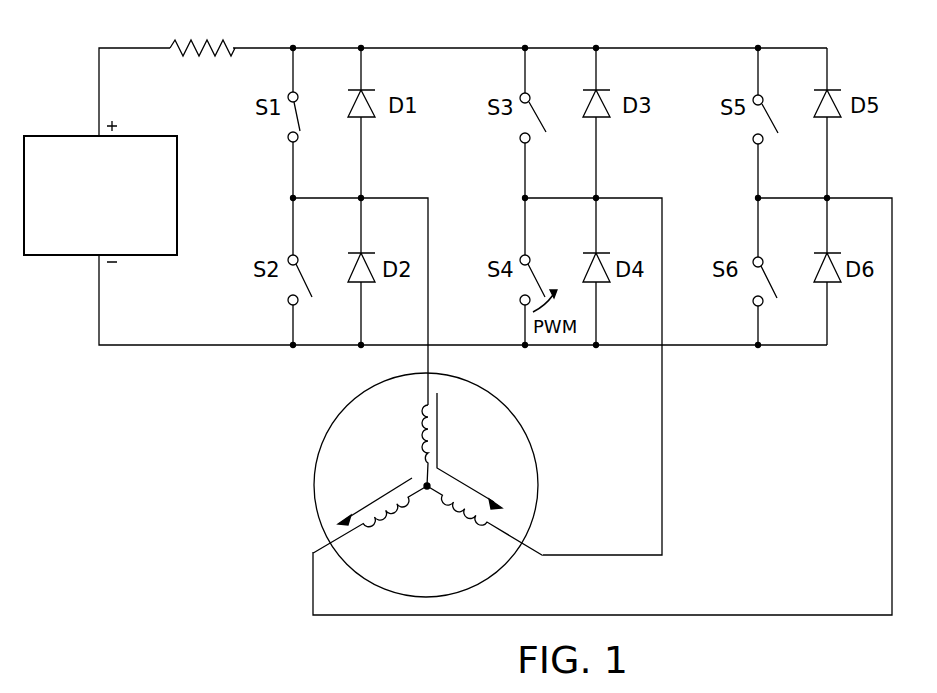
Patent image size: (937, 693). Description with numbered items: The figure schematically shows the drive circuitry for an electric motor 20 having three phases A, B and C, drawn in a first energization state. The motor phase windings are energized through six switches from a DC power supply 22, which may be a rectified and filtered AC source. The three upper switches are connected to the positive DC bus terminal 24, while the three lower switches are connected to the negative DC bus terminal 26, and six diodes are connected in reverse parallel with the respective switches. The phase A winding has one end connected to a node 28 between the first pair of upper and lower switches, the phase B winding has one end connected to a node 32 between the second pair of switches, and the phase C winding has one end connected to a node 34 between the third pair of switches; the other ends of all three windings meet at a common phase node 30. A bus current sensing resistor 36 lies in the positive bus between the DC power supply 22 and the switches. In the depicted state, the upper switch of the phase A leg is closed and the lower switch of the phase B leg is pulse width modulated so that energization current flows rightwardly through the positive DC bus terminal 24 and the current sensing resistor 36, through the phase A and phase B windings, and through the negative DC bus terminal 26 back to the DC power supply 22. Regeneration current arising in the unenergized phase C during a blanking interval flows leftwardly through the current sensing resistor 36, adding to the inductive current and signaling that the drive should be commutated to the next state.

The electric motor 20 is at (339, 407).
The DC power supply 22 is at (178, 181).
The positive DC bus terminal 24 is at (121, 48).
The negative DC bus terminal 26 is at (176, 345).
The node 28 is at (293, 198).
The common phase node 30 is at (427, 489).
The node 32 is at (525, 198).
The node 34 is at (758, 198).
The bus current sensing resistor 36 is at (225, 48).